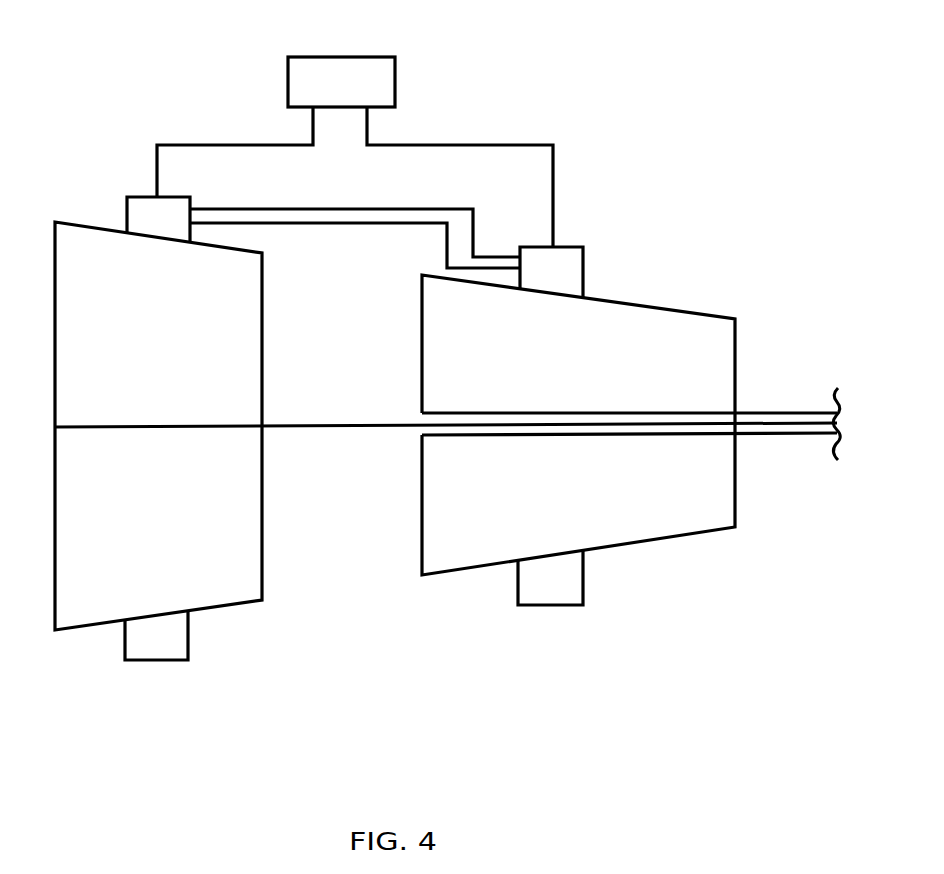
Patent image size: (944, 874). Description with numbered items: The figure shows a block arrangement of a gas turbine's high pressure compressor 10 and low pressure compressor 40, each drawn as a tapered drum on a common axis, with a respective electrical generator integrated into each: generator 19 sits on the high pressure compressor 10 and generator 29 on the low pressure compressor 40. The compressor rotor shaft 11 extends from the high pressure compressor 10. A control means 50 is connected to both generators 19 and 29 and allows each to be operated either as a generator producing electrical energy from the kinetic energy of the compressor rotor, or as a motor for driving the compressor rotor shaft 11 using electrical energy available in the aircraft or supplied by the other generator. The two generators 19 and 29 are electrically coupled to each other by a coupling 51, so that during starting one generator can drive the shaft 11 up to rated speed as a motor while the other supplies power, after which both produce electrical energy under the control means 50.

The high pressure compressor 10 is at (683, 347).
The compressor rotor shaft 11 is at (783, 423).
The electrical generator 19 is at (563, 270).
The electrical generator 29 is at (155, 210).
The low pressure compressor 40 is at (103, 275).
The control means 50 is at (347, 85).
The coupling 51 is at (357, 204).